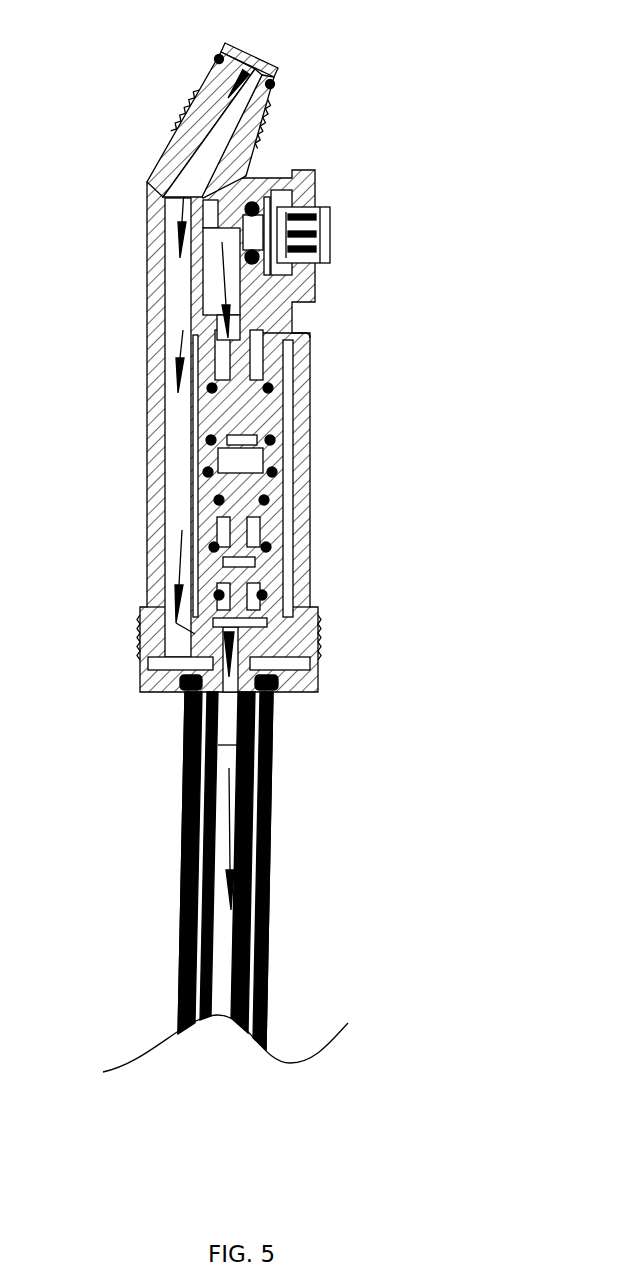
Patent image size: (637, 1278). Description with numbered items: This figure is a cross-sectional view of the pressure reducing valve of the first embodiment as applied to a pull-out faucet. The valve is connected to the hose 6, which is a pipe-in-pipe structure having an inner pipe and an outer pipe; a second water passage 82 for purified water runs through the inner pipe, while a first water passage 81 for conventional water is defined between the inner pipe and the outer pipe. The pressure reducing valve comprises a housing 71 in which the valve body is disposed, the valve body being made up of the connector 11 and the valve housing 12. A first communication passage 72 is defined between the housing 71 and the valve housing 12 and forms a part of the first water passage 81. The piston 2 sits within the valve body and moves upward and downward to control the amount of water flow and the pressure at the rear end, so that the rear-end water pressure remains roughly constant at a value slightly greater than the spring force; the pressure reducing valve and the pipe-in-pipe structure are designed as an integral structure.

The housing 71 is at (217, 128).
The first communication passage 72 is at (180, 493).
The first water passage 81 is at (228, 97).
The second water passage 82 is at (316, 234).
The connector 11 is at (308, 335).
The piston 2 is at (277, 445).
The valve housing 12 is at (273, 565).
The hose 6 is at (273, 827).